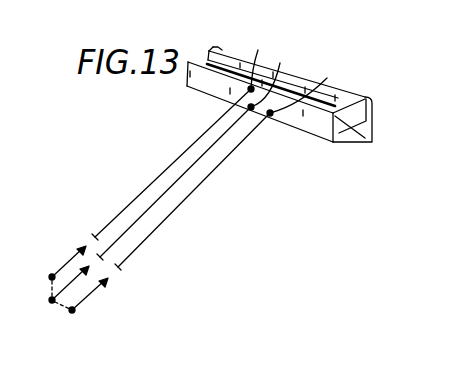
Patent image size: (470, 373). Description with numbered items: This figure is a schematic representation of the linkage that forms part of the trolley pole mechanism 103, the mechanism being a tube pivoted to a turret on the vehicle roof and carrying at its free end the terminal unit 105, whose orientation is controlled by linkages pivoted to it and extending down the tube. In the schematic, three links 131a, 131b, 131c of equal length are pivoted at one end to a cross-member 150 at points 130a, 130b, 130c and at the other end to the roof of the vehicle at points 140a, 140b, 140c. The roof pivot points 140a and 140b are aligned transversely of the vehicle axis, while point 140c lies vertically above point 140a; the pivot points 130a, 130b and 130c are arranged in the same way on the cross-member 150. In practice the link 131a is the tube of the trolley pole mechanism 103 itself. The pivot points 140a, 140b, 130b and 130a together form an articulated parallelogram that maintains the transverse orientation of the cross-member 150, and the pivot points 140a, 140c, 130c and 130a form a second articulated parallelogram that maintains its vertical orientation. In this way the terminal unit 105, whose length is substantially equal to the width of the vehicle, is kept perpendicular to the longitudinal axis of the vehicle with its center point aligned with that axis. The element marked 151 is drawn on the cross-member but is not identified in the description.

The trolley pole mechanism 103 is at (188, 139).
The terminal unit 105 is at (345, 143).
The pivot point 130a is at (284, 78).
The pivot point 130b is at (315, 87).
The pivot point 130c is at (259, 61).
The link 131a is at (165, 193).
The link 131b is at (156, 234).
The link 131c is at (117, 213).
The pivot point 140a is at (52, 303).
The pivot point 140b is at (75, 311).
The pivot point 140c is at (52, 276).
The cross-member 150 is at (315, 125).
The cover strip 151 is at (218, 46).